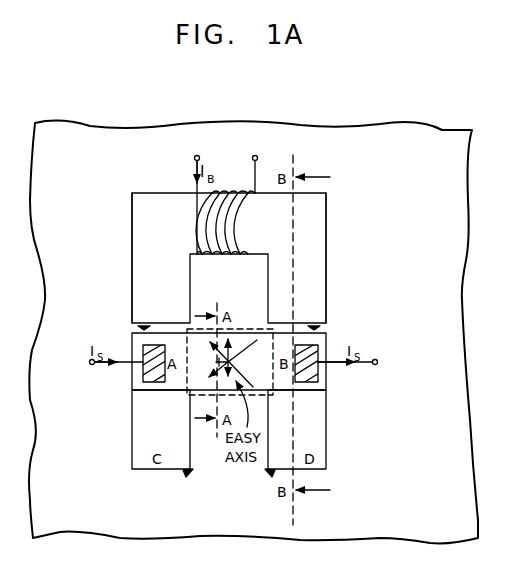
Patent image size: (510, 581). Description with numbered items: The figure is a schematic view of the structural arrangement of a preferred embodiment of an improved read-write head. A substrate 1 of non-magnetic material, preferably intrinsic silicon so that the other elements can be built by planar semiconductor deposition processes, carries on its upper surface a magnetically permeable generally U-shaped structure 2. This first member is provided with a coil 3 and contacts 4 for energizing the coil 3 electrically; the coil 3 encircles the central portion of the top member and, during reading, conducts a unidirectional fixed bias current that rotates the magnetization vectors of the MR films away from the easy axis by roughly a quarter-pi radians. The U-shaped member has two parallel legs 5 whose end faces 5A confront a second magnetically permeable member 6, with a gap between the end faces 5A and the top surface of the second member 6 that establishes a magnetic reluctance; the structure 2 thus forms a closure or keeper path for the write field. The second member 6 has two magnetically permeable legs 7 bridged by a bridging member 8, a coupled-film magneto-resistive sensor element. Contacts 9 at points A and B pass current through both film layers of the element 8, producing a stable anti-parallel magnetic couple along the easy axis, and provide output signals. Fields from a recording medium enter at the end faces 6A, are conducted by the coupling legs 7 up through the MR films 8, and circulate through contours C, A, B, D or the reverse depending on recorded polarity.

The substrate 1 is at (442, 130).
The magnetically permeable U-shaped structure 2 is at (326, 212).
The coil 3 is at (228, 174).
The contacts 4 is at (194, 158).
The legs 5 is at (132, 262).
The end faces 5A is at (148, 327).
The second magnetically permeable member 6 is at (322, 342).
The end faces 6A is at (277, 472).
The magnetically permeable legs 7 is at (137, 431).
The bridging member 8 is at (222, 338).
The contacts 9 is at (150, 370).